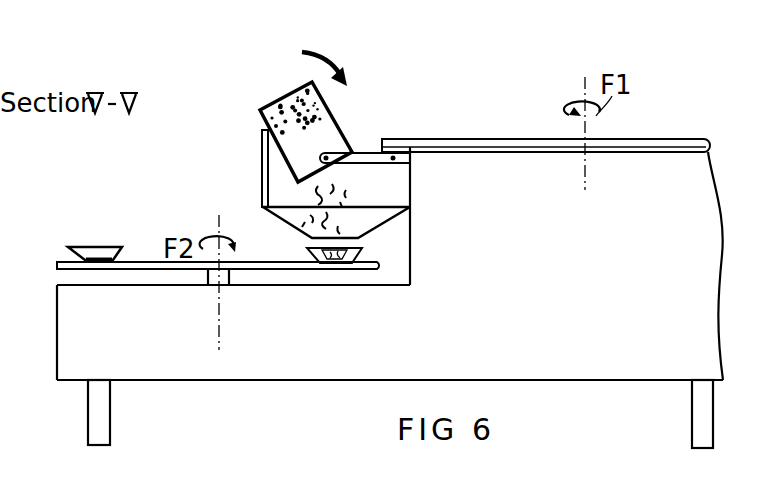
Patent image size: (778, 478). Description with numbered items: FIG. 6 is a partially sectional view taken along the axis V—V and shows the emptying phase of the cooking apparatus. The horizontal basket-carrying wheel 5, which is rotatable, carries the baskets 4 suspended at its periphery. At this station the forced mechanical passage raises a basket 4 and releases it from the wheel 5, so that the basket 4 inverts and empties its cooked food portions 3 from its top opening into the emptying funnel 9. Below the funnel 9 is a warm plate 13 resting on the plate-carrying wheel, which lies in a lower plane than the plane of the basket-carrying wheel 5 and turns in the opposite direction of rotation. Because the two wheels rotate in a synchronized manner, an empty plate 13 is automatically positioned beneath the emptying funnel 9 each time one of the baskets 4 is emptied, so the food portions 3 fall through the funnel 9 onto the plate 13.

The food portions 3 is at (320, 227).
The basket 4 is at (331, 110).
The basket-carrying wheel 5 is at (690, 143).
The emptying funnel 9 is at (262, 131).
The warm plate 13 is at (100, 245).